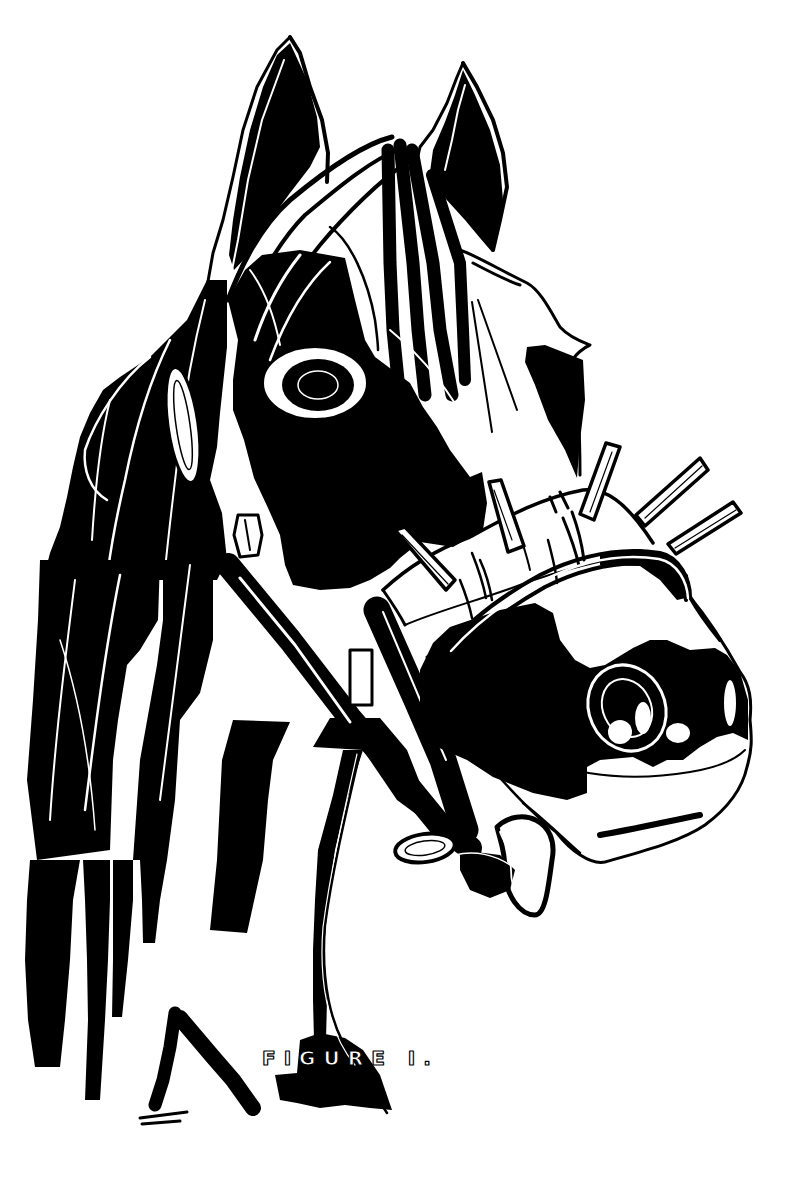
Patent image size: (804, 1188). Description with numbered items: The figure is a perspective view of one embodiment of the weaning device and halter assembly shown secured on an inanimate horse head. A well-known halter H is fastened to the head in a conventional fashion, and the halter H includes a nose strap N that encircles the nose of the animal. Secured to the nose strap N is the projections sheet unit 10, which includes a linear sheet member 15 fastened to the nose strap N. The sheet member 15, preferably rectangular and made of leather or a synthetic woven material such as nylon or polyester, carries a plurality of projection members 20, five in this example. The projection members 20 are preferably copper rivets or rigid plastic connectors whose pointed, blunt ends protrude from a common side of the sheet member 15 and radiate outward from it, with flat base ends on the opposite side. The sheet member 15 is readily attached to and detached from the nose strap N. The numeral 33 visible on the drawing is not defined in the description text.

The projections sheet unit 10 is at (521, 478).
The sheet member 15 is at (527, 510).
The projection members 20 is at (490, 483).
The strap 33 is at (500, 603).
The halter H is at (283, 585).
The nose strap N is at (340, 600).